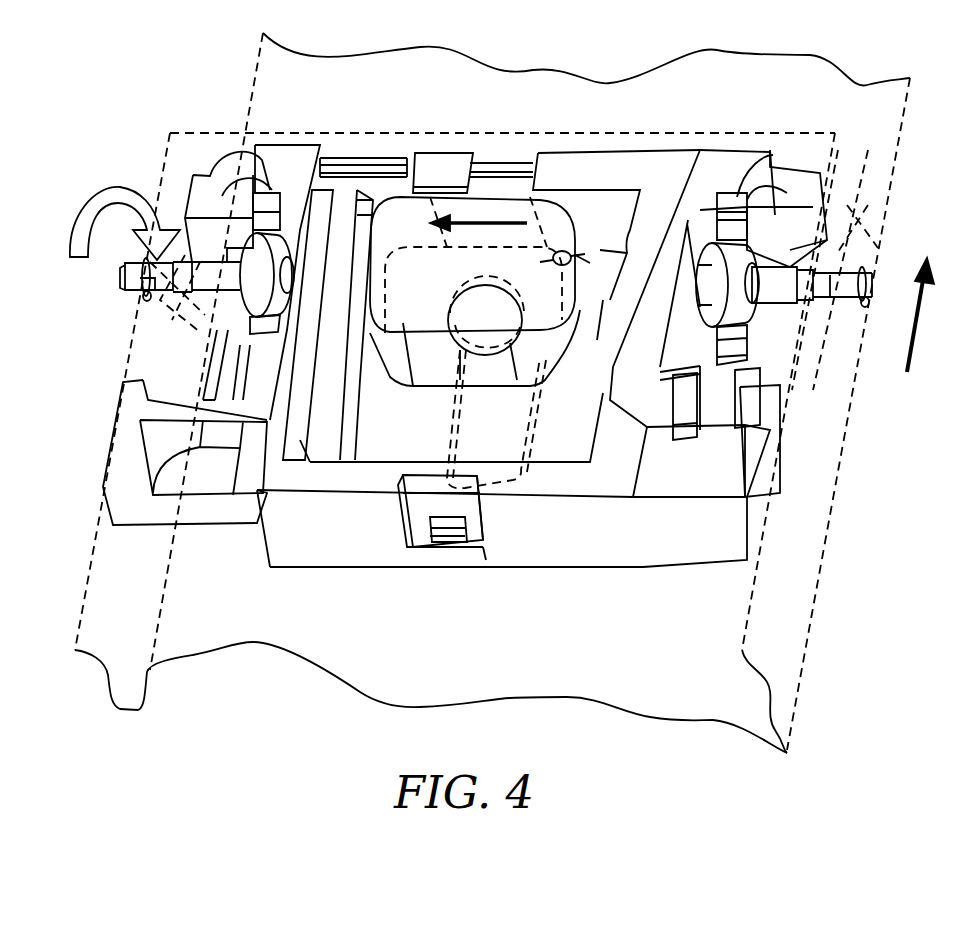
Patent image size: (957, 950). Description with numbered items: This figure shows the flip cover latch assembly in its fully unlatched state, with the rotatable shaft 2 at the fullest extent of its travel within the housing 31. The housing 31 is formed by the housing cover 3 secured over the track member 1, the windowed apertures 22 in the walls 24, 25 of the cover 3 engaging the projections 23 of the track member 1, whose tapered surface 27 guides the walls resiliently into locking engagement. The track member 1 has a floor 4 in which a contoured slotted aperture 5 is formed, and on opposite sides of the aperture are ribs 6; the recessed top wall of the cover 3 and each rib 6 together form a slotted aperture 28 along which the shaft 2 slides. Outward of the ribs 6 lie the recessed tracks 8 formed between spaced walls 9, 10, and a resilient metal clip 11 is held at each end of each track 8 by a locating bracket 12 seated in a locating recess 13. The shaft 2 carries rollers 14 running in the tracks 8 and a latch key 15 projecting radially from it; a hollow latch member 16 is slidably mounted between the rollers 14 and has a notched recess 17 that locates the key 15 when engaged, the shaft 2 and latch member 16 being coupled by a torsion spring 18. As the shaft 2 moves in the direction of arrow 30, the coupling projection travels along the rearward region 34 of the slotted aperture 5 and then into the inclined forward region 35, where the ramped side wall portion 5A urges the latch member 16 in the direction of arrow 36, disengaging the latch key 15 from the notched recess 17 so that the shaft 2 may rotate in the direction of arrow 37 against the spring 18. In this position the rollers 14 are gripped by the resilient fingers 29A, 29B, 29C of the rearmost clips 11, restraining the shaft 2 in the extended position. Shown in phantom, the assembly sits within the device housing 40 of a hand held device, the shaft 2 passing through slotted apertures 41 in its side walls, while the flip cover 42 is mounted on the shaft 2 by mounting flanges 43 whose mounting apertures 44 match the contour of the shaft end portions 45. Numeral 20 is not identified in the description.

The track member 1 is at (670, 545).
The rotatable shaft 2 is at (757, 295).
The housing cover 3 is at (597, 490).
The floor 4 is at (570, 427).
The contoured slotted aperture 5 is at (460, 427).
The ramped surface or side wall portion 5A is at (497, 315).
The ribs 6 is at (350, 400).
The recessed tracks 8 is at (268, 374).
The wall 9 is at (220, 335).
The wall 10 is at (682, 342).
The resilient metal clip 11 is at (250, 414).
The locating bracket 12 is at (262, 215).
The locating recess 13 is at (728, 193).
The rollers 14 is at (713, 275).
The latch key 15 is at (597, 320).
The hollow latch member 16 is at (445, 207).
The notched recess 17 is at (552, 258).
The torsion spring 18 is at (578, 255).
The shaft 20 is at (812, 308).
The windowed apertures 22 is at (410, 525).
The projections 23 is at (442, 546).
The wall 24 is at (492, 555).
The wall 25 is at (585, 207).
The tapered surface 27 is at (466, 527).
The slotted aperture 28 is at (345, 336).
The resilient finger 29A is at (695, 393).
The resilient finger 29B is at (703, 422).
The resilient finger 29C is at (790, 403).
The arrow 30 is at (925, 315).
The housing 31 is at (522, 565).
The rearward region 34 is at (520, 481).
The forward region 35 is at (462, 293).
The arrow 36 is at (478, 213).
The arrow 37 is at (119, 221).
The device housing 40 is at (800, 605).
The slotted apertures 41 is at (165, 335).
The flip cover 42 is at (741, 66).
The mounting flanges 43 is at (163, 305).
The mounting apertures 44 is at (140, 262).
The shaft end portions 45 is at (125, 281).